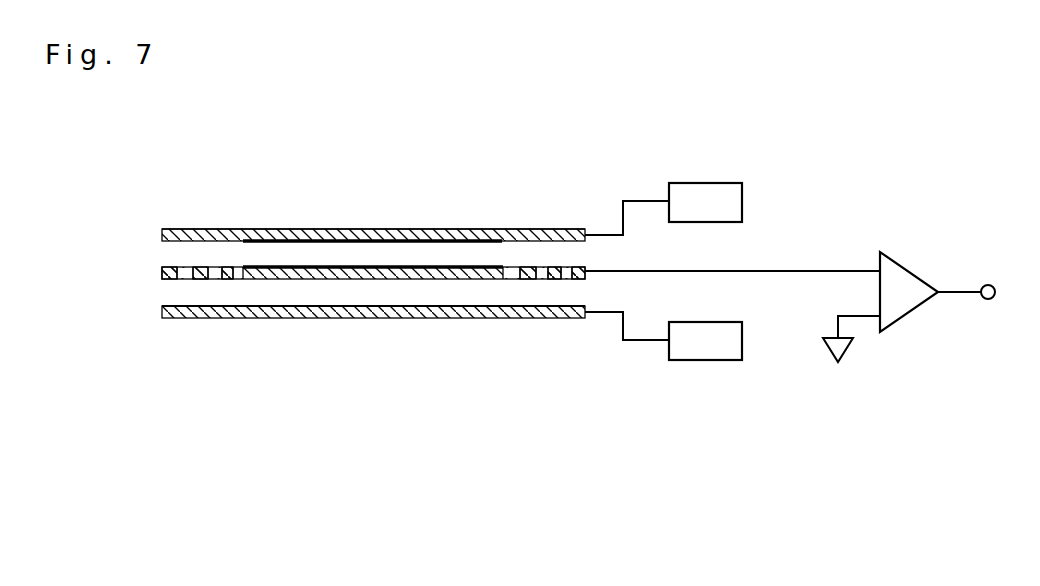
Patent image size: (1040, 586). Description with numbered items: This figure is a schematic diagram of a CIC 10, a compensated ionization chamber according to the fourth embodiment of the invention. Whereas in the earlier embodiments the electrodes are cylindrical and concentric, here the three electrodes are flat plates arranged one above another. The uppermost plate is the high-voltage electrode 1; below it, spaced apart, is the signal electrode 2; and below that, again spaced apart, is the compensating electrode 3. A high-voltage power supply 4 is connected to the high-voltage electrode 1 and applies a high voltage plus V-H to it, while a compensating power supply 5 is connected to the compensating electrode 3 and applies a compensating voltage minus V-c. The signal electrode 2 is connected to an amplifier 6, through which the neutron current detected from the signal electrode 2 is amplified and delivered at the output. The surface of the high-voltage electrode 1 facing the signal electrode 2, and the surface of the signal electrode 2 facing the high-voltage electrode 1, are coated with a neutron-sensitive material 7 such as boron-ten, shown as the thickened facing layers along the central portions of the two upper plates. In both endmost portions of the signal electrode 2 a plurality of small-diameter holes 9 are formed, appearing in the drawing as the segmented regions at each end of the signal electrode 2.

The high-voltage electrode 1 is at (160, 235).
The signal electrode 2 is at (160, 272).
The compensating electrode 3 is at (160, 313).
The high-voltage power supply 4 is at (731, 183).
The compensating power supply 5 is at (712, 360).
The amplifier 6 is at (905, 262).
The neutron-sensitive material 7 is at (288, 265).
The small-diameter holes 9 is at (222, 268).
The CIC 10 is at (441, 226).